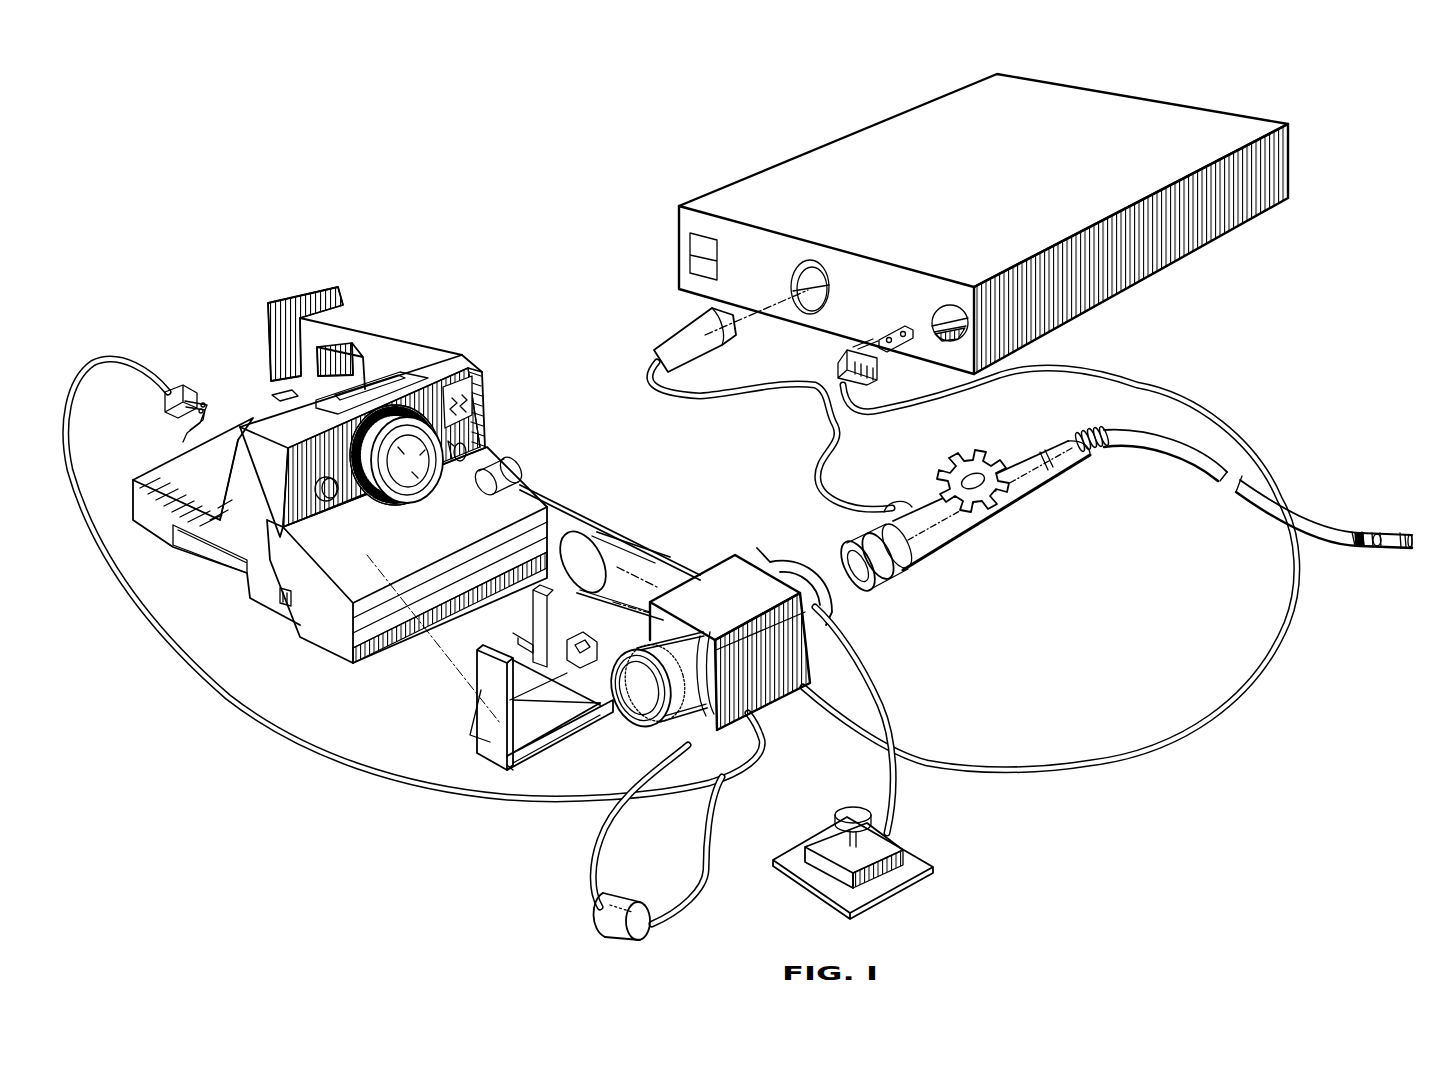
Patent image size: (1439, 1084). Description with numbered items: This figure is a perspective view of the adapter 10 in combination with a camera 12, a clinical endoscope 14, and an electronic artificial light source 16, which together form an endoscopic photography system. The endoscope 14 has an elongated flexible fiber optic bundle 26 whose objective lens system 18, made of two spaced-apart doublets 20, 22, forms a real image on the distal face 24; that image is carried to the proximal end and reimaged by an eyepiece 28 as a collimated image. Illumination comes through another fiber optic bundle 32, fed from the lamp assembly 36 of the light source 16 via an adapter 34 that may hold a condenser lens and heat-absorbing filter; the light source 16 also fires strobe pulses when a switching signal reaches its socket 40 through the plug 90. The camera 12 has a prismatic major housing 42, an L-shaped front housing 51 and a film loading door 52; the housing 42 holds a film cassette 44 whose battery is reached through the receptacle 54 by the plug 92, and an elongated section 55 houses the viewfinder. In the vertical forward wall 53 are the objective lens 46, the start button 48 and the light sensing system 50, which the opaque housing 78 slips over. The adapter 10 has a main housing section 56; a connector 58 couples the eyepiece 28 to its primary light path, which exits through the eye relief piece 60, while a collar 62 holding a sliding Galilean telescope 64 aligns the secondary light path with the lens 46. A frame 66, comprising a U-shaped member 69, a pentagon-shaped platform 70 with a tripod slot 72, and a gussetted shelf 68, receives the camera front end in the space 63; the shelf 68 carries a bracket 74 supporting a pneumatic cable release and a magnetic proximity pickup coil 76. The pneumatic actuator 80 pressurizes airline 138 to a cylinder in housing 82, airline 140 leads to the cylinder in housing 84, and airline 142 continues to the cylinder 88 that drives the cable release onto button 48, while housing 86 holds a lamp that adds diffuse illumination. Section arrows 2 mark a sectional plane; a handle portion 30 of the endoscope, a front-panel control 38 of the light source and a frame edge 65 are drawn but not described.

The section line 2- 2 is at (818, 636).
The adapter 10 is at (713, 552).
The camera 12 is at (470, 348).
The clinical endoscope 14 is at (1053, 434).
The electronic artificial light source 16 is at (783, 158).
The objective lens system 18 is at (1405, 524).
The doublet 20 is at (1374, 547).
The doublet 22 is at (1405, 549).
The distal face 24 is at (1377, 530).
The fiber optic bundle 26 is at (1356, 530).
The eyepiece 28 is at (892, 582).
The endoscope handle with focusing wheel 30 is at (993, 508).
The fiber optic bundle 32 is at (845, 510).
The adapter 34 is at (672, 330).
The lamp assembly 36 is at (820, 280).
The control knob 38 is at (942, 303).
The socket 40 is at (889, 330).
The major housing 42 is at (264, 608).
The film cassette 44 is at (188, 552).
The photographic objective lens 46 is at (400, 497).
The camera start button 48 is at (333, 500).
The light sensing system 50 is at (458, 463).
The front housing 51 is at (492, 407).
The film loading door 52 is at (320, 656).
The vertical forward wall 53 is at (489, 423).
The battery voltage receptacle 54 is at (175, 443).
The elongated section 55 is at (366, 322).
The main housing section 56 is at (650, 648).
The connector 58 is at (781, 560).
The eye relief piece 60 is at (635, 718).
The cylindrical collar 62 is at (642, 554).
The space 63 is at (562, 732).
The Galilean telescope 64 is at (606, 534).
The plate edge 65 is at (545, 752).
The frame 66 is at (478, 690).
The shelf member 68 is at (548, 690).
The U-shaped member 69 is at (520, 765).
The platform member 70 is at (472, 733).
The slot 72 is at (515, 640).
The bracket 74 is at (566, 656).
The magnetic proximity pickup coil 76 is at (536, 600).
The opaque housing 78 is at (510, 465).
The pneumatic actuator 80 is at (912, 875).
The cylinder housing 82 is at (740, 554).
The cylinder housing 84 is at (687, 746).
The housing 86 is at (779, 700).
The cylinder 88 is at (630, 902).
The plug 90 is at (867, 384).
The plug 92 is at (176, 384).
The airline 138 is at (878, 688).
The airline 140 is at (703, 632).
The airline 142 is at (709, 812).